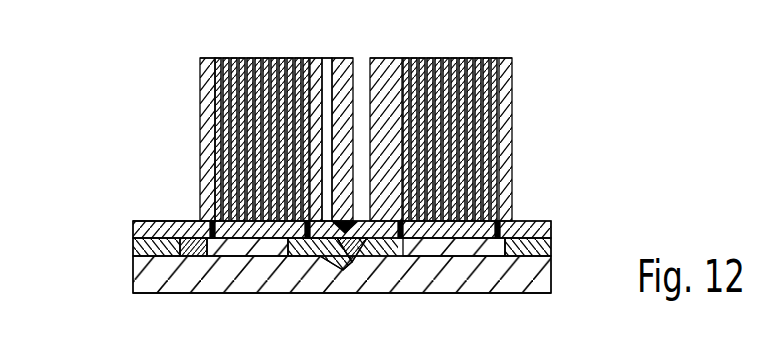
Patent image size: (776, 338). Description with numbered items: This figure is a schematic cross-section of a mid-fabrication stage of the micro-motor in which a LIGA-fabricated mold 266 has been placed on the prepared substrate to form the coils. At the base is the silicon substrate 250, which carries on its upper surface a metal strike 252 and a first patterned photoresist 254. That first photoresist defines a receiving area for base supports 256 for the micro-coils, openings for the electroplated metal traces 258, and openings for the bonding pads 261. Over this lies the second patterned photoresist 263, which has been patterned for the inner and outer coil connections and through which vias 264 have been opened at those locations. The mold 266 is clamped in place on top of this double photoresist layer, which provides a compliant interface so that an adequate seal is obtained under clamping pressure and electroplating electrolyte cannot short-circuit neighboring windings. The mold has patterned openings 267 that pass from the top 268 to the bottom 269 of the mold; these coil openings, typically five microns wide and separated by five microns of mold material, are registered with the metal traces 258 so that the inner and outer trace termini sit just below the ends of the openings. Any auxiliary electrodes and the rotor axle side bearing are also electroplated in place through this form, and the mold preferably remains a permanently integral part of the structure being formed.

The silicon substrate 250 is at (143, 288).
The metal strike 252 is at (133, 252).
The patterned photoresist 254 is at (133, 236).
The base supports 256 is at (418, 250).
The metal traces 258 is at (208, 58).
The bonding pads 261 is at (184, 258).
The second patterned photoresist 263 is at (153, 221).
The vias 264 is at (498, 221).
The mold 266 is at (513, 123).
The patterned openings 267 is at (363, 58).
The top of the mold 268 is at (342, 315).
The bottom of the mold 269 is at (200, 221).